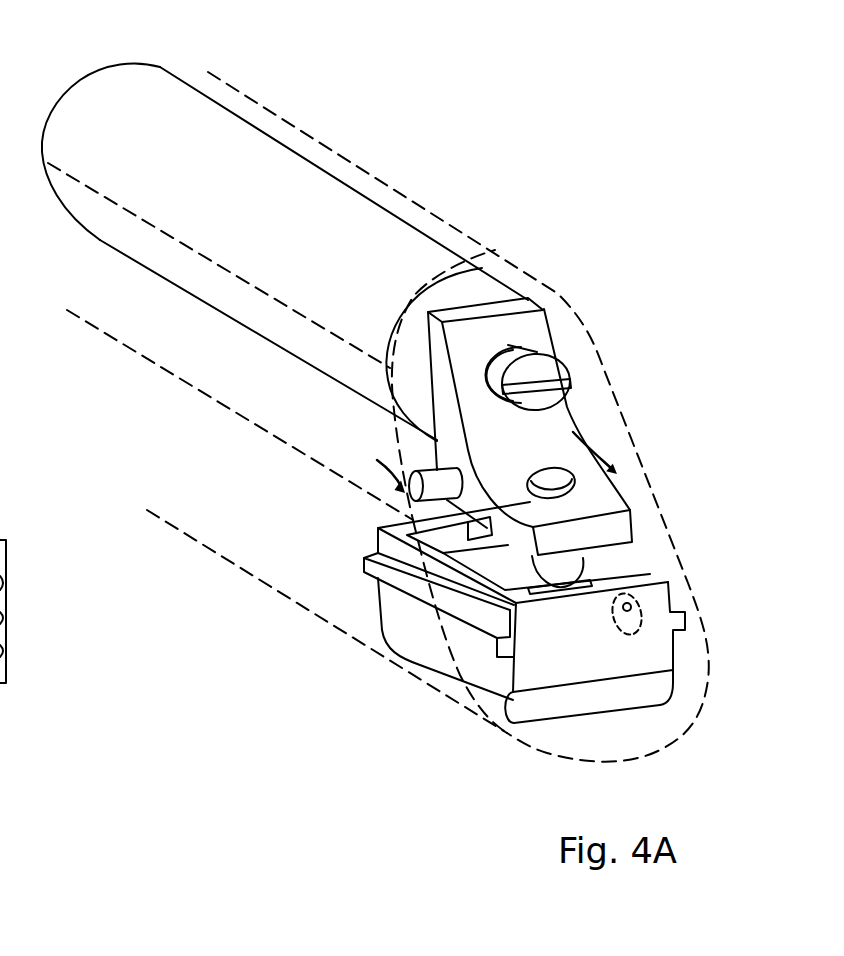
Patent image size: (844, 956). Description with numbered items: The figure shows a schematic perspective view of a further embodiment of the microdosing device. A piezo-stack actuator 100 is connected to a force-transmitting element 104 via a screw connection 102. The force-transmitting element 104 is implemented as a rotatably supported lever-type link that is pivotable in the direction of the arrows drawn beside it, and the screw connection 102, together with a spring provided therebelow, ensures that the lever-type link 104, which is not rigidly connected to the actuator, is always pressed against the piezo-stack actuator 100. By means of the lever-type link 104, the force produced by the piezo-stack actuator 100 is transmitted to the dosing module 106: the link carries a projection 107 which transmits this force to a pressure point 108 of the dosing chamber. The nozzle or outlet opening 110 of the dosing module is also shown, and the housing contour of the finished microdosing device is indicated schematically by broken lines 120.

The piezo-stack actuator 100 is at (305, 227).
The screw connection 102 is at (548, 393).
The force-transmitting element 104 is at (555, 341).
The dosing module 106 is at (480, 670).
The projection 107 is at (552, 567).
The pressure point 108 is at (615, 584).
The nozzle or outlet opening 110 is at (630, 610).
The broken lines 120 is at (145, 357).